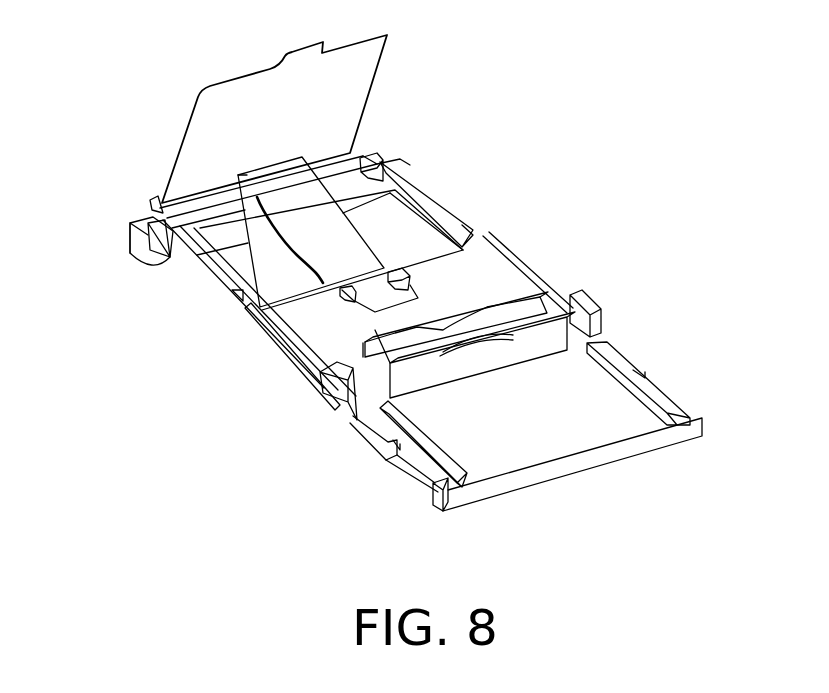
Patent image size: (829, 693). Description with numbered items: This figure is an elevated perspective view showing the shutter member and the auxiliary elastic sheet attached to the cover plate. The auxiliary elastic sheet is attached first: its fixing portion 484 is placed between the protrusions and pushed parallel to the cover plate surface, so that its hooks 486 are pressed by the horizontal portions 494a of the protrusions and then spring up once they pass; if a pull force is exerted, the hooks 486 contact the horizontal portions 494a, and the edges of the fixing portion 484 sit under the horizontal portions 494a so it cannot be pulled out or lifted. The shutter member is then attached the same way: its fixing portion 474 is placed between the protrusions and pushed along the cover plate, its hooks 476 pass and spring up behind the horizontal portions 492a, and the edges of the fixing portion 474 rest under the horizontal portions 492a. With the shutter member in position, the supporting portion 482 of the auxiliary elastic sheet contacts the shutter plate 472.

The shutter plate 472 is at (357, 92).
The fixing portion 474 is at (450, 208).
The hooks 476 is at (153, 270).
The supporting portion 482 is at (293, 208).
The fixing portion 484 is at (337, 265).
The hooks 486 is at (347, 303).
The horizontal portions 492a is at (130, 240).
The horizontal portions 494a is at (395, 272).